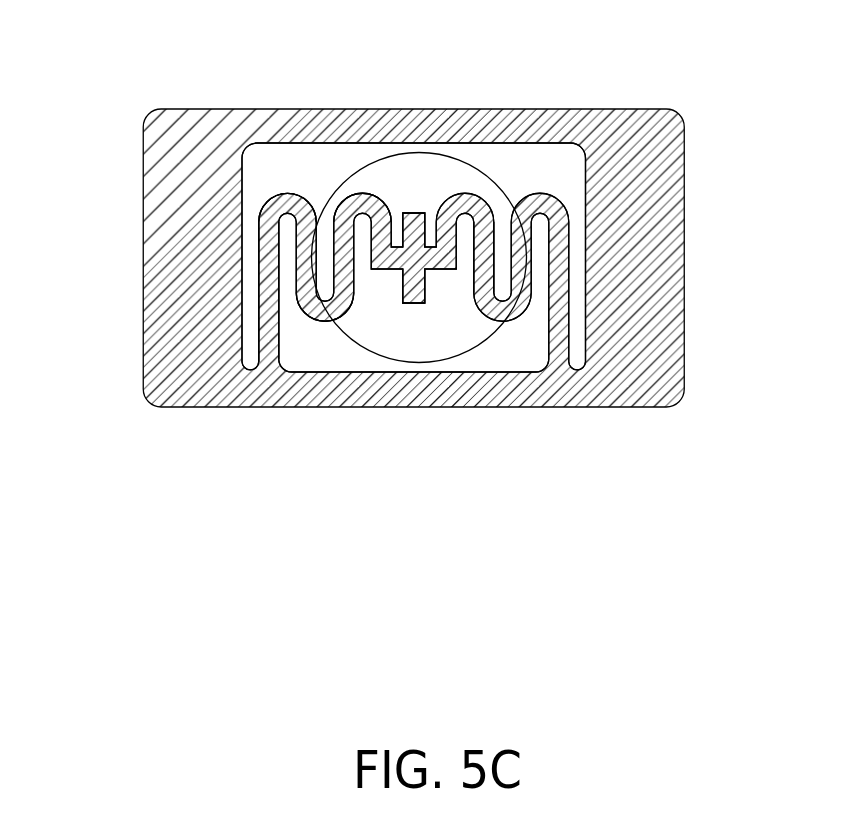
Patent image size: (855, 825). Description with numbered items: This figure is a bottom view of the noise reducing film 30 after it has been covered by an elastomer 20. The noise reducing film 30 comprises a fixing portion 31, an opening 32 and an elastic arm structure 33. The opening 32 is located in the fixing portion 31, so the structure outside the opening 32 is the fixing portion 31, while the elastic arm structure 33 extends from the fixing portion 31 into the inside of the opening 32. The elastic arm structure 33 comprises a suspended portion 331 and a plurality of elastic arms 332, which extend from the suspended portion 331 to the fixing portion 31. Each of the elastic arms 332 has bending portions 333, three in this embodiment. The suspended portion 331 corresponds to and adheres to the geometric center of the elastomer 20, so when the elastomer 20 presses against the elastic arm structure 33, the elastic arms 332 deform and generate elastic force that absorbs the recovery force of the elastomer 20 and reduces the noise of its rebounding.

The noise reducing film 30 is at (126, 60).
The fixing portion 31 is at (665, 252).
The opening 32 is at (513, 160).
The elastic arm structure 33 is at (378, 200).
The suspended portion 331 is at (405, 272).
The elastic arms 332 is at (262, 330).
The bending portions 333 is at (361, 200).
The elastomer 20 is at (445, 175).